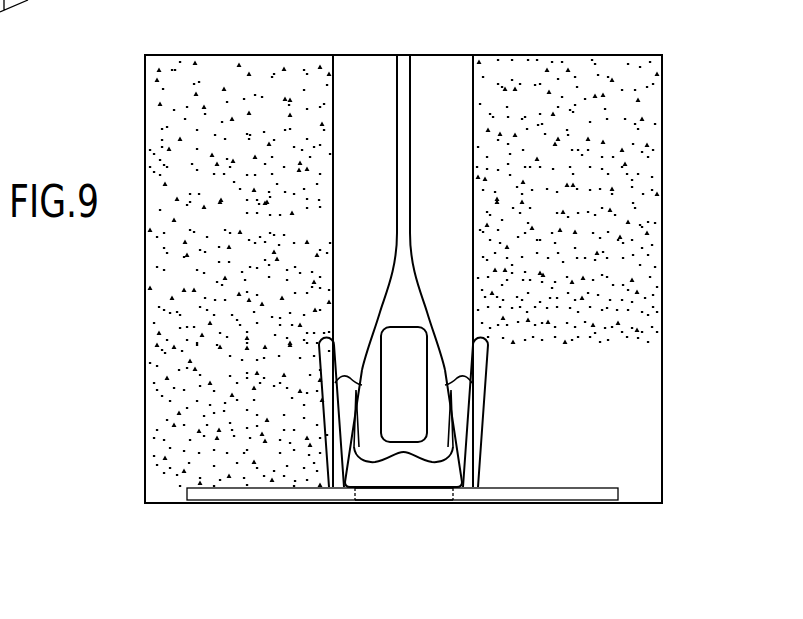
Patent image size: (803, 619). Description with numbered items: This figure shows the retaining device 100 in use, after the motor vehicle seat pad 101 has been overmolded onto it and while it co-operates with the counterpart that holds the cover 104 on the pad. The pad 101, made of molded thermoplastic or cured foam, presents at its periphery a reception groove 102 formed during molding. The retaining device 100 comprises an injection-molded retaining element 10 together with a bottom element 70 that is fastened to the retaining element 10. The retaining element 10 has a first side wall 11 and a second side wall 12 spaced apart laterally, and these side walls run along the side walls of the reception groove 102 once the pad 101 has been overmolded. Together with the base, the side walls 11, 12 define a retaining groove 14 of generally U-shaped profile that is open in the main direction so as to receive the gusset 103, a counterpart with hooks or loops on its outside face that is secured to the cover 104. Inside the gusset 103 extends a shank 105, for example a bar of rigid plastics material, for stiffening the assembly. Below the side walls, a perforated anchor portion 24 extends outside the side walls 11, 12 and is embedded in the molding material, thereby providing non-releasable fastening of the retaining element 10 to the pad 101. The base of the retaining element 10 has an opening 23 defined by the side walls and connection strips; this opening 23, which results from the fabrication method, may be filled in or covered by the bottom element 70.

The motor vehicle seat pad 101 is at (177, 147).
The reception groove 102 is at (436, 100).
The cover 104 is at (403, 93).
The gusset 103 is at (433, 335).
The shank 105 is at (395, 353).
The retaining groove 14 is at (352, 362).
The second side wall 12 is at (477, 403).
The first side wall 11 is at (333, 420).
The retaining element 10 is at (268, 503).
The opening 23 is at (368, 490).
The bottom element 70 is at (408, 500).
The retaining device 100 is at (442, 502).
The anchor portion 24 is at (598, 493).